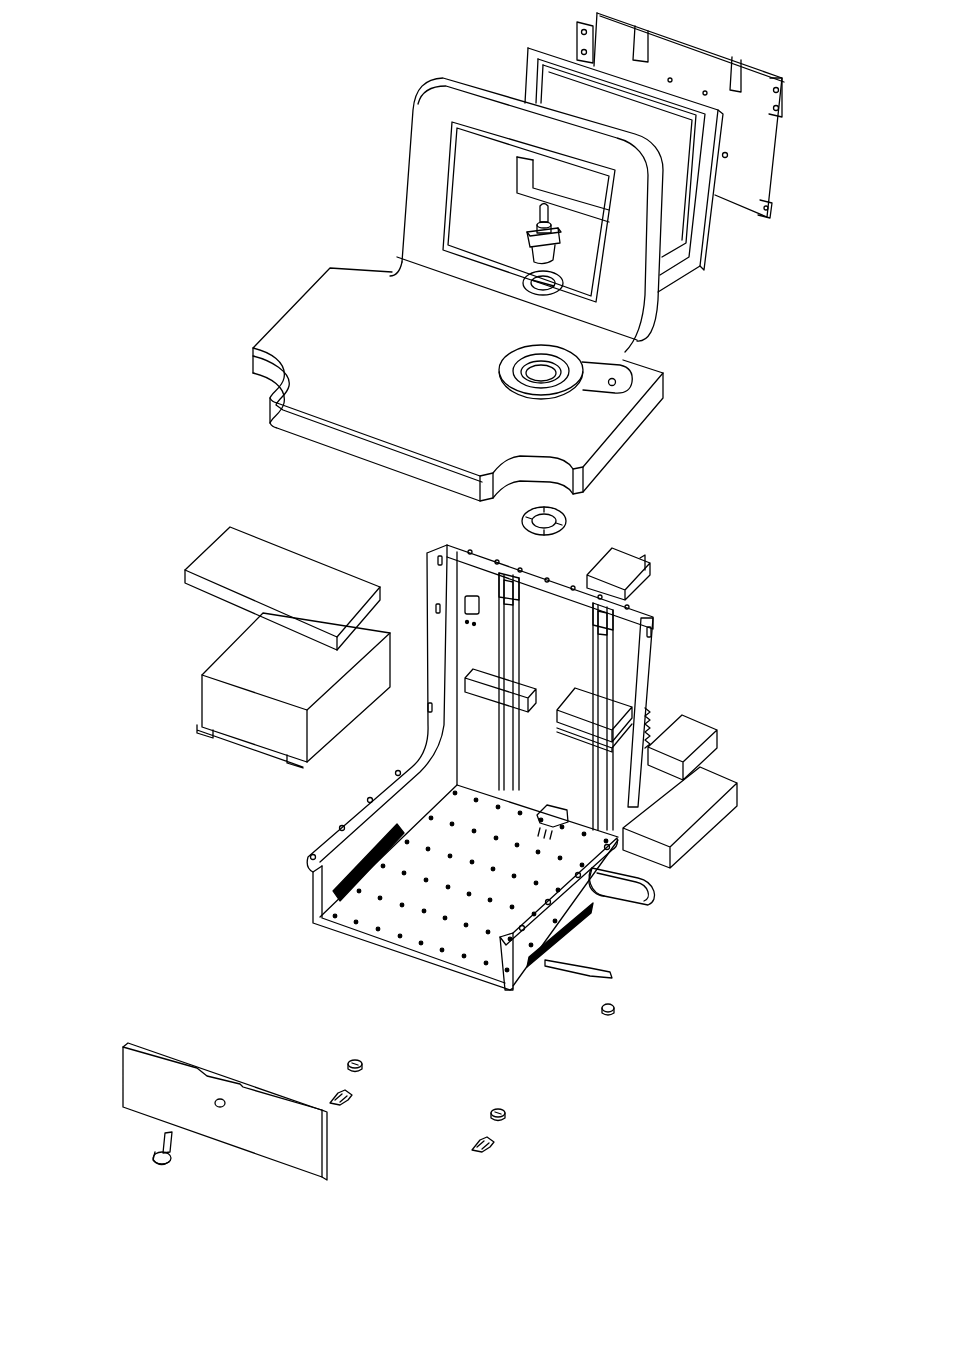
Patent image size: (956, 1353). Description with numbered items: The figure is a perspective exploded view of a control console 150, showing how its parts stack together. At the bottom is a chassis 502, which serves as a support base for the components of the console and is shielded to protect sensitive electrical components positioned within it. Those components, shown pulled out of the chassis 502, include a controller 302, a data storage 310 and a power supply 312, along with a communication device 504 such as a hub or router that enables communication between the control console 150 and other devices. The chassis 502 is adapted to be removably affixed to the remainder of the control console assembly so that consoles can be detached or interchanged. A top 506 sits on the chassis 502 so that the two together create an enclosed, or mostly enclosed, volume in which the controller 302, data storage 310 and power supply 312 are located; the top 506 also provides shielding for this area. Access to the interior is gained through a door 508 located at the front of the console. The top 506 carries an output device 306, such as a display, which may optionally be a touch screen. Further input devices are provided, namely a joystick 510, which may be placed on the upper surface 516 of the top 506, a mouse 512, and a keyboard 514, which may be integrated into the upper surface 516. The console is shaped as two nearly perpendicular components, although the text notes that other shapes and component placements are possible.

The control console 150 is at (200, 88).
The output device 306 is at (718, 193).
The upper surface 516 is at (321, 317).
The joystick 510 is at (558, 238).
The top 506 is at (253, 348).
The keyboard 514 is at (220, 558).
The controller 302 is at (233, 663).
The chassis 502 is at (400, 910).
The communication device 504 is at (623, 700).
The data storage 310 is at (712, 752).
The power supply 312 is at (723, 808).
The mouse 512 is at (642, 902).
The door 508 is at (130, 1077).